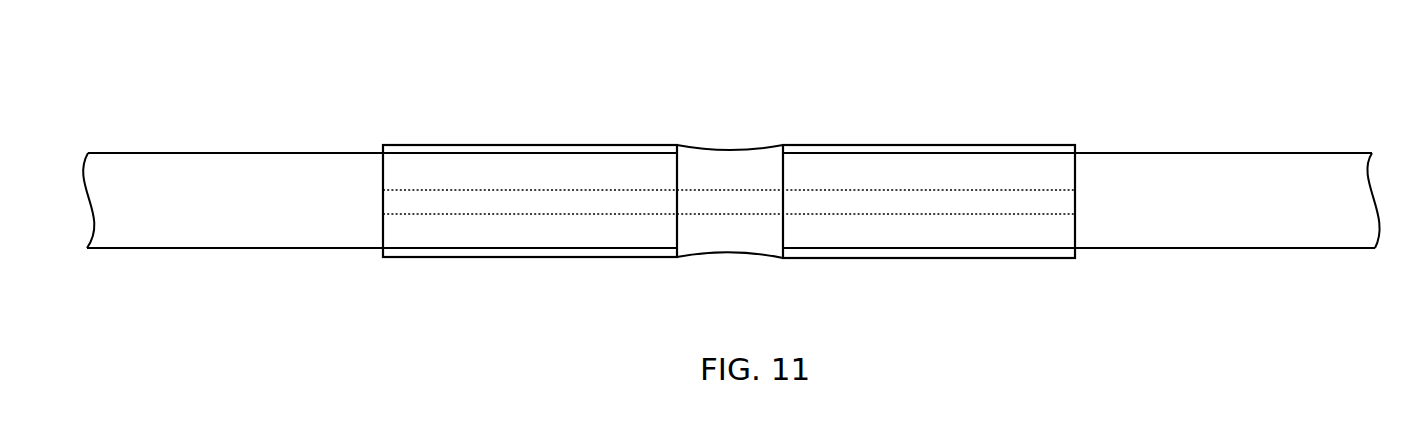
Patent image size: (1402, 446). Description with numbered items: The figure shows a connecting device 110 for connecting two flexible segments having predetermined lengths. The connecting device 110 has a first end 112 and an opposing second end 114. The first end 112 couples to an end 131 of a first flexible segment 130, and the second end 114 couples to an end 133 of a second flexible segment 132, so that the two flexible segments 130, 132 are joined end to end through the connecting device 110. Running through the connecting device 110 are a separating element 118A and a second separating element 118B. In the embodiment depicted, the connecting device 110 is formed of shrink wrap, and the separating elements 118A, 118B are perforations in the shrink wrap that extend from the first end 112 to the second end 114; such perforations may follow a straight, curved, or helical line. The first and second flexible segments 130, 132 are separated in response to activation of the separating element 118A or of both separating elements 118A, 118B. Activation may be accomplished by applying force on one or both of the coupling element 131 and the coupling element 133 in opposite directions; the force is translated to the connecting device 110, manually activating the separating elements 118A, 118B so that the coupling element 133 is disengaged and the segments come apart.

The connecting device 110 is at (755, 125).
The first end 112 is at (505, 283).
The second end 114 is at (948, 287).
The separating element 118A is at (933, 190).
The second separating element 118B is at (698, 213).
The first flexible segment 130 is at (182, 184).
The end of first flexible segment 131 is at (543, 163).
The second flexible segment 132 is at (1249, 190).
The end of second flexible segment 133 is at (1015, 185).